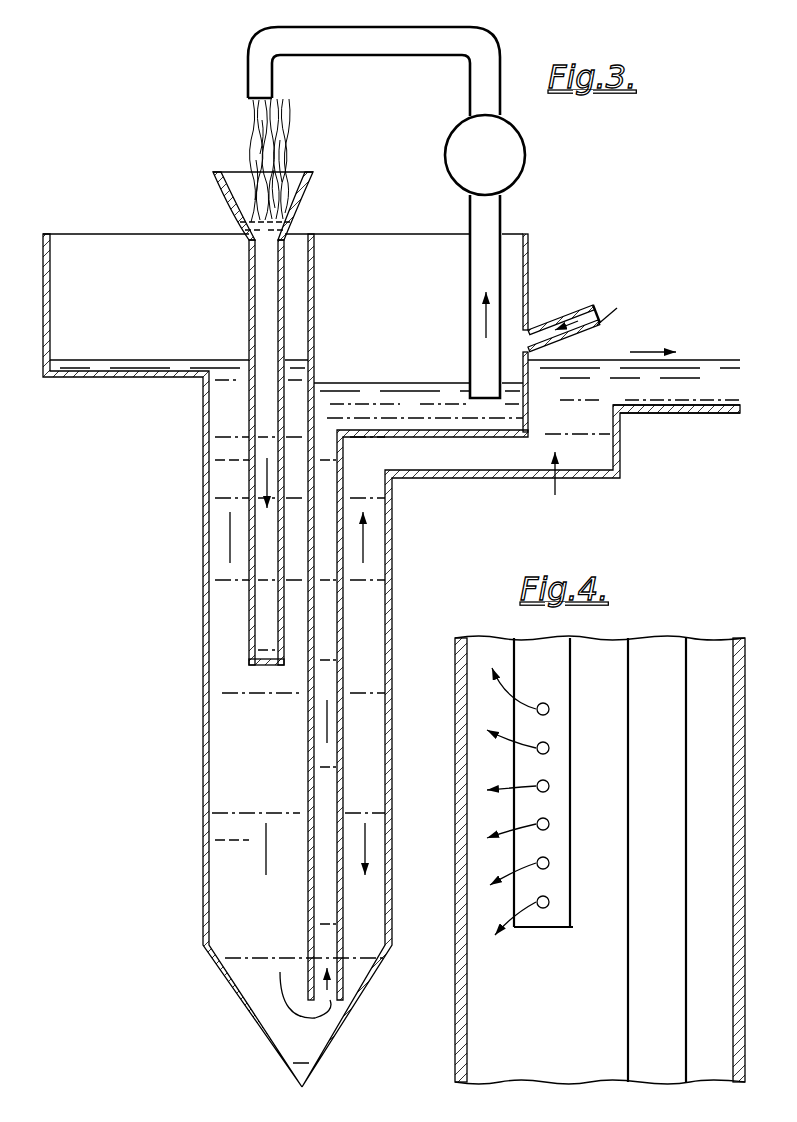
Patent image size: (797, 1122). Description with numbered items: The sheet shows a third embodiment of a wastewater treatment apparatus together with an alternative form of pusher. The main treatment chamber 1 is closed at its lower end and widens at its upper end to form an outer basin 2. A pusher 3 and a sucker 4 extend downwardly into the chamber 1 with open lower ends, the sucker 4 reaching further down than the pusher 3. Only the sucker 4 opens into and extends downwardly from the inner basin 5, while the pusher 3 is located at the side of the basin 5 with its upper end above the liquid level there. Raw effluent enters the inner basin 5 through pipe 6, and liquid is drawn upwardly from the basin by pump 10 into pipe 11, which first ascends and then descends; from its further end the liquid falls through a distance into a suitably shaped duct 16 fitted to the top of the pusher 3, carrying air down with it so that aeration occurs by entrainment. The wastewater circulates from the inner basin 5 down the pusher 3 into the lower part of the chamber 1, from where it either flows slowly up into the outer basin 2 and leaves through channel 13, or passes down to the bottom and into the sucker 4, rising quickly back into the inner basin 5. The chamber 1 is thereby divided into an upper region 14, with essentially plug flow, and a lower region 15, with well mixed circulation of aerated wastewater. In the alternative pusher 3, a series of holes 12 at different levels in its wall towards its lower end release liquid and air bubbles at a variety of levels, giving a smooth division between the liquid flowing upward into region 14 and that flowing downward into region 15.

In FIG. 3, the main treatment chamber 1 is at (230, 680).
In FIG. 4, the main treatment chamber 1 is at (715, 1025).
In FIG. 3, the outer basin 2 is at (566, 486).
In FIG. 3, the pusher 3 is at (262, 596).
In FIG. 4, the pusher 3 is at (556, 735).
In FIG. 3, the sucker 4 is at (340, 610).
In FIG. 4, the sucker 4 is at (665, 765).
In FIG. 3, the inner basin 5 is at (505, 412).
In FIG. 3, the pipe 6 is at (585, 333).
In FIG. 3, the pump 10 is at (512, 167).
In FIG. 3, the pipe 11 is at (485, 78).
In FIG. 4, the holes 12 is at (548, 790).
In FIG. 3, the channel 13 is at (705, 388).
In FIG. 3, the upper region 14 is at (230, 478).
In FIG. 3, the lower region 15 is at (238, 858).
In FIG. 3, the duct 16 is at (243, 200).